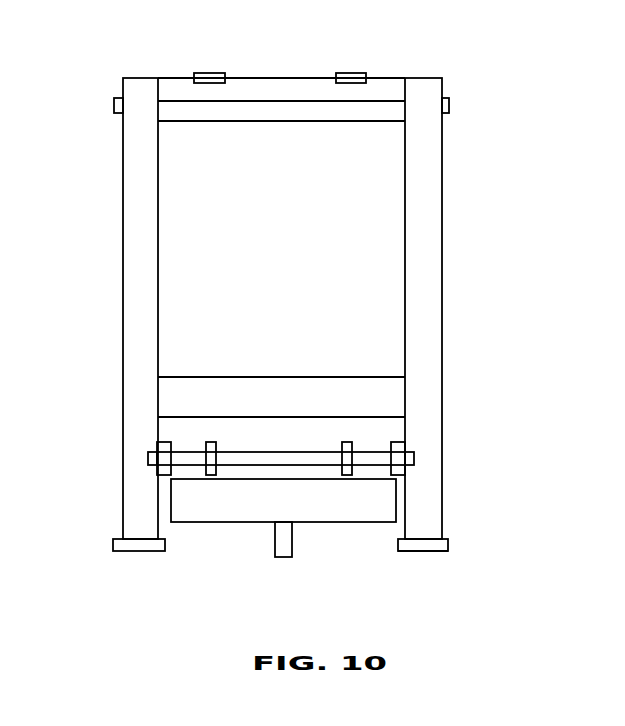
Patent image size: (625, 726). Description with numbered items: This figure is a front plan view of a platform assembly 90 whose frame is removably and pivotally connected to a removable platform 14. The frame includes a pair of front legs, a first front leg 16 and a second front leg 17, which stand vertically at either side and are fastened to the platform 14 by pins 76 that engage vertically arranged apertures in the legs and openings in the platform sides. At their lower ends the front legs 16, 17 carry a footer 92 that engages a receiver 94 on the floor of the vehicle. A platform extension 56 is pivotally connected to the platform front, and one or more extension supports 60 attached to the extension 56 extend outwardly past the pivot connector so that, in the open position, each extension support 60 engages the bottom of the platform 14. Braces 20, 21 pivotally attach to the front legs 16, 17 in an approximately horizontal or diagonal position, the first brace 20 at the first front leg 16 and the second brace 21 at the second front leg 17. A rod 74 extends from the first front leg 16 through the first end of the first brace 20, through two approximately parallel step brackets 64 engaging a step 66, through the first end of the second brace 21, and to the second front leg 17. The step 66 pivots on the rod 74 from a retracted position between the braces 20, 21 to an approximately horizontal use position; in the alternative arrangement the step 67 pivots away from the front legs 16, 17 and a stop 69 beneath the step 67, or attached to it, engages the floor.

The platform 14 is at (303, 112).
The first front leg 16 is at (428, 248).
The second front leg 17 is at (131, 285).
The first brace 20 is at (397, 450).
The second brace 21 is at (162, 447).
The platform extension 56 is at (260, 90).
The extension support 60 is at (212, 73).
The step brackets 64 is at (206, 442).
The step 66 is at (327, 507).
The step 67 is at (268, 390).
The stop 69 is at (282, 548).
The rod 74 is at (305, 460).
The pins 76 is at (447, 100).
The platform assembly 90 is at (504, 156).
The footer 92 is at (420, 540).
The receiver 94 is at (438, 551).